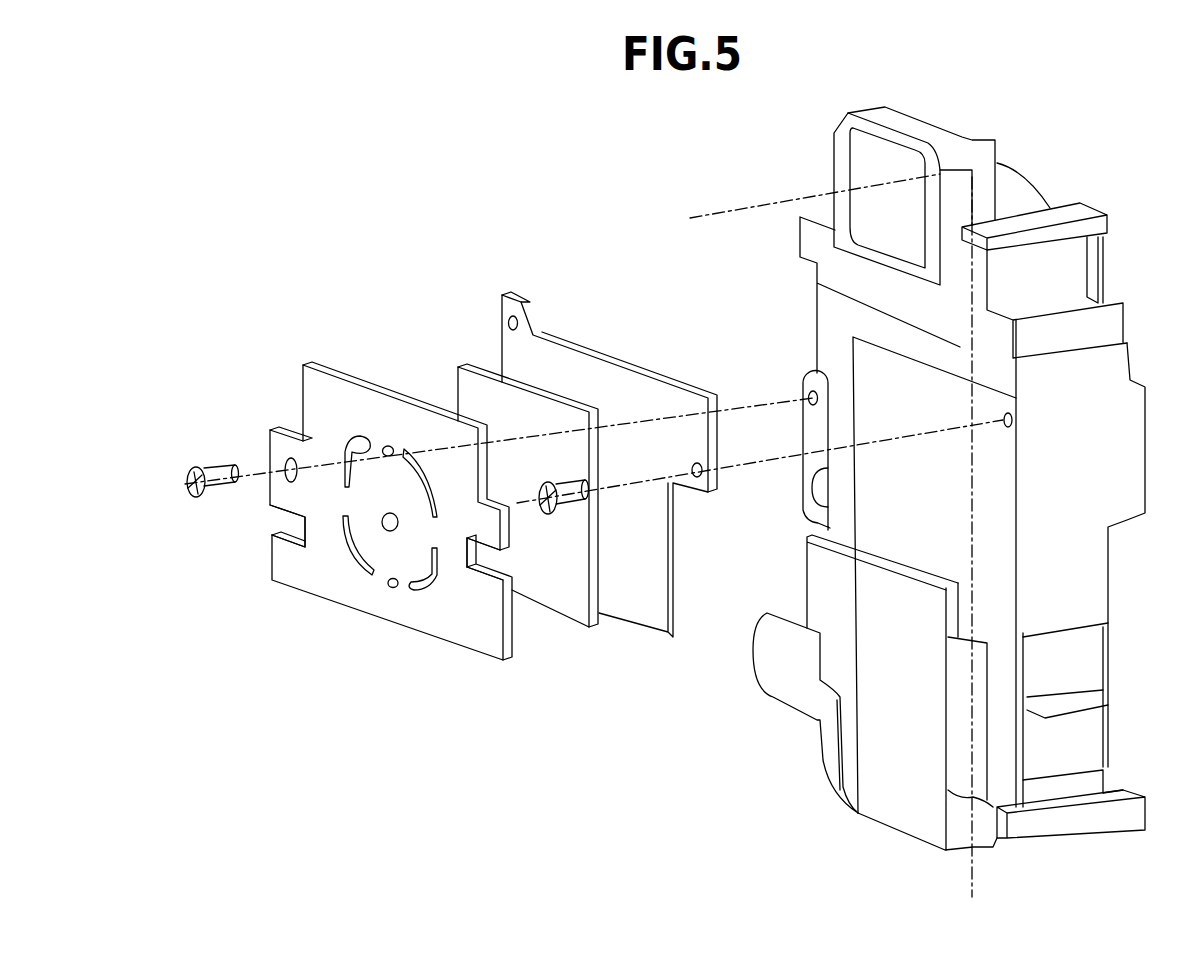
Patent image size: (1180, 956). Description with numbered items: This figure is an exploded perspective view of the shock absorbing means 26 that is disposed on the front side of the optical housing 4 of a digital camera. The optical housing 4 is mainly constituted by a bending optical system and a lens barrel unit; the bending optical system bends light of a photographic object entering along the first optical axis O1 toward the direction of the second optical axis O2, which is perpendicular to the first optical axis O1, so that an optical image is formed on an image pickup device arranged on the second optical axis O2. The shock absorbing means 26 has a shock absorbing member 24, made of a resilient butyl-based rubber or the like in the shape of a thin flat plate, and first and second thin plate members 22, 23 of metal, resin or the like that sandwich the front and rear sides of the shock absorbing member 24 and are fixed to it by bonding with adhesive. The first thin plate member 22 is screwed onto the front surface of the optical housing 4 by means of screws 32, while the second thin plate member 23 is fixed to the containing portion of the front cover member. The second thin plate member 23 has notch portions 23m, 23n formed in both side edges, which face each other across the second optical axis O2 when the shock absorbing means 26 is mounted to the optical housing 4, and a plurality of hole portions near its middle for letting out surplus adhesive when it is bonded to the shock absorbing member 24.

The optical housing 4 is at (837, 337).
The first thin plate member 22 is at (635, 605).
The second thin plate member 23 is at (403, 607).
The notch portion 23m is at (483, 562).
The notch portion 23n is at (292, 523).
The shock absorbing member 24 is at (535, 600).
The shock absorbing means 26 is at (267, 305).
The screw 32 is at (213, 468).
The first optical axis O1 is at (757, 205).
The second optical axis O2 is at (972, 468).